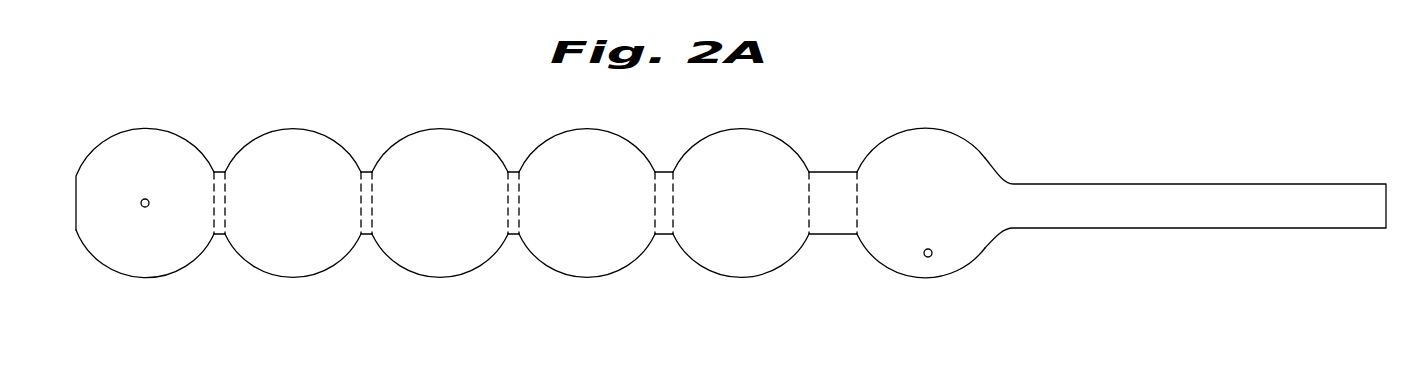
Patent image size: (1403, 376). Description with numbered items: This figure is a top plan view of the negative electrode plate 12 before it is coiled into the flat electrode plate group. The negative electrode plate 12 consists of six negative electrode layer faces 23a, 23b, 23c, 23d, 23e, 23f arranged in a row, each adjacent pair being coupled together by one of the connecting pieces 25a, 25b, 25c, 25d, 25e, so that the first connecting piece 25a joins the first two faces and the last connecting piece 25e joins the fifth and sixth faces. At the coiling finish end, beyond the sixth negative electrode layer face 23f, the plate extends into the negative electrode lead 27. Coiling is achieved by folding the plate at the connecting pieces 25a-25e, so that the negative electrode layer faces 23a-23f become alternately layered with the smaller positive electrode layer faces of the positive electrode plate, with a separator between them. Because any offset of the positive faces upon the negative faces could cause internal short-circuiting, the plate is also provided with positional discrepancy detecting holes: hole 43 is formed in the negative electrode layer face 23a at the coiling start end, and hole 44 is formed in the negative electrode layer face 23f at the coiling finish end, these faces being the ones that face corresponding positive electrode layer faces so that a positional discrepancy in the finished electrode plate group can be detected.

The negative electrode plate 12 is at (731, 202).
The negative electrode layer face 23a is at (157, 147).
The negative electrode layer face 23b is at (300, 148).
The negative electrode layer face 23c is at (450, 145).
The negative electrode layer face 23d is at (605, 145).
The negative electrode layer face 23e is at (757, 148).
The negative electrode layer face 23f is at (947, 153).
The connecting piece 25a is at (222, 216).
The connecting piece 25b is at (373, 215).
The connecting piece 25c is at (520, 216).
The connecting piece 25d is at (674, 216).
The connecting piece 25e is at (838, 216).
The negative electrode lead 27 is at (1135, 195).
The positional discrepancy detecting hole 43 is at (142, 207).
The positional discrepancy detecting hole 44 is at (933, 255).